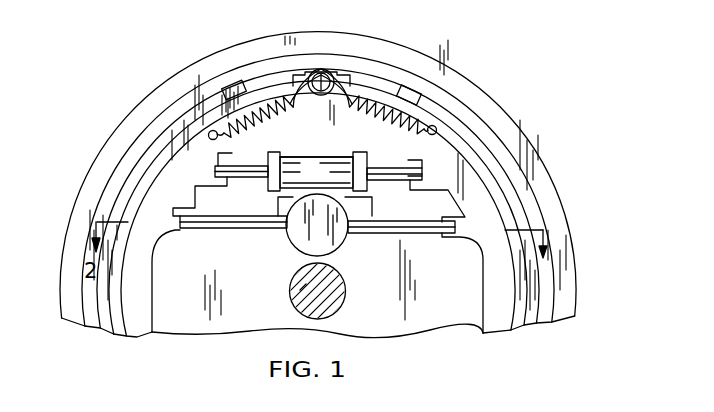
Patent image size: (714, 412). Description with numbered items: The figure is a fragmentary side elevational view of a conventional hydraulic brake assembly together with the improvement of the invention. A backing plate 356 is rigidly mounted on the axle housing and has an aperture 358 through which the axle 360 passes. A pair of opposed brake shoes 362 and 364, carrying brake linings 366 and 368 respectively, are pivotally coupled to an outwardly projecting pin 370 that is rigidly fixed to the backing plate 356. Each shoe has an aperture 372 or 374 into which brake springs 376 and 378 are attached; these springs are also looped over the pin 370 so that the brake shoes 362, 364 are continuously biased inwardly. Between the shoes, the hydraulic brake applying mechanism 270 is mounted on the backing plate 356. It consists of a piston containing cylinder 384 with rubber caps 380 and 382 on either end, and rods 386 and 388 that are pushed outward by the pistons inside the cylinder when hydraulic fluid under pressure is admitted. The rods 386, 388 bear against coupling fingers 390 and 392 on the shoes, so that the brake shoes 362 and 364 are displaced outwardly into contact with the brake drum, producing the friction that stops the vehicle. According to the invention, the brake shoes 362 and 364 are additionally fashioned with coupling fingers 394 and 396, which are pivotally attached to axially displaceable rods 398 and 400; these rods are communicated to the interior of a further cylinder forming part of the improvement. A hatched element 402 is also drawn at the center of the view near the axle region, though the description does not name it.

The hydraulic brake applying mechanism 270 is at (312, 158).
The backing plate 356 is at (403, 57).
The aperture 358 is at (343, 295).
The axle 360 is at (300, 290).
The brake shoe 362 is at (503, 213).
The brake shoe 364 is at (137, 202).
The brake lining 366 is at (465, 138).
The brake lining 368 is at (165, 137).
The pin 370 is at (323, 80).
The aperture 372 is at (436, 128).
The aperture 374 is at (210, 130).
The brake spring 376 is at (405, 100).
The brake spring 378 is at (268, 95).
The rubber cap 380 is at (328, 235).
The rubber cap 382 is at (274, 192).
The piston containing cylinder 384 is at (348, 158).
The rod 386 is at (399, 181).
The rod 388 is at (243, 172).
The coupling finger 390 is at (422, 175).
The coupling finger 392 is at (215, 167).
The coupling finger 394 is at (458, 240).
The coupling finger 396 is at (160, 246).
The rod 398 is at (420, 234).
The rod 400 is at (215, 229).
The bearing bore 402 is at (327, 252).